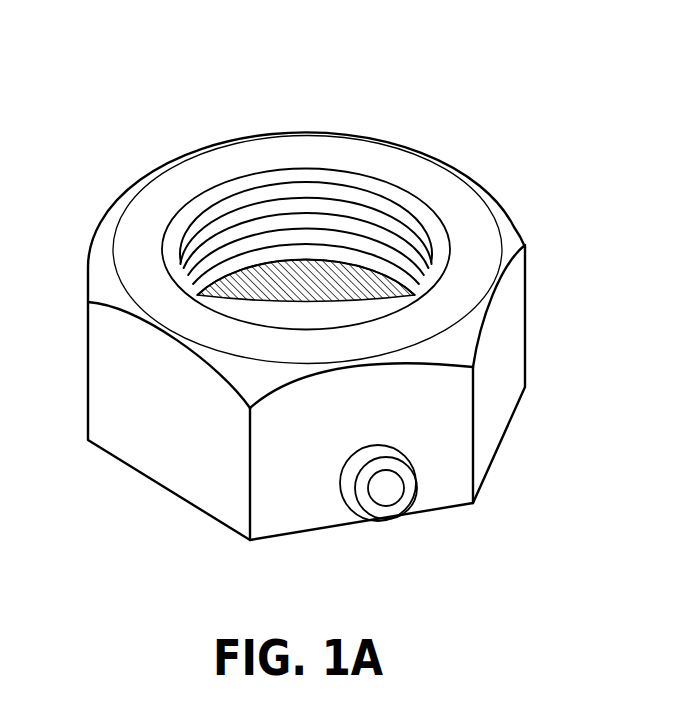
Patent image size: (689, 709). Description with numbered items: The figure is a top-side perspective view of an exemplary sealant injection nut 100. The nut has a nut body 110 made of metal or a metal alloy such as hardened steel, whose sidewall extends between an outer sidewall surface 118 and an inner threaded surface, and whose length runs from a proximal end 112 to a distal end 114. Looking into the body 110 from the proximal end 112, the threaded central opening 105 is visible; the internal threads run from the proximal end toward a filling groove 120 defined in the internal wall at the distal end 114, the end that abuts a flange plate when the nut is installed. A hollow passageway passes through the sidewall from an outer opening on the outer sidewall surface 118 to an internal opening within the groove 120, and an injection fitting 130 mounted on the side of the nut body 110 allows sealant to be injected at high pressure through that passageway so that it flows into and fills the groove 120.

The sealant injection nut 100 is at (132, 93).
The threaded bore 105 is at (337, 218).
The nut body 110 is at (93, 227).
The proximal end 112 is at (468, 226).
The distal end 114 is at (315, 528).
The outer sidewall surface 118 is at (157, 460).
The filling groove 120 is at (362, 288).
The injection fitting 130 is at (422, 484).